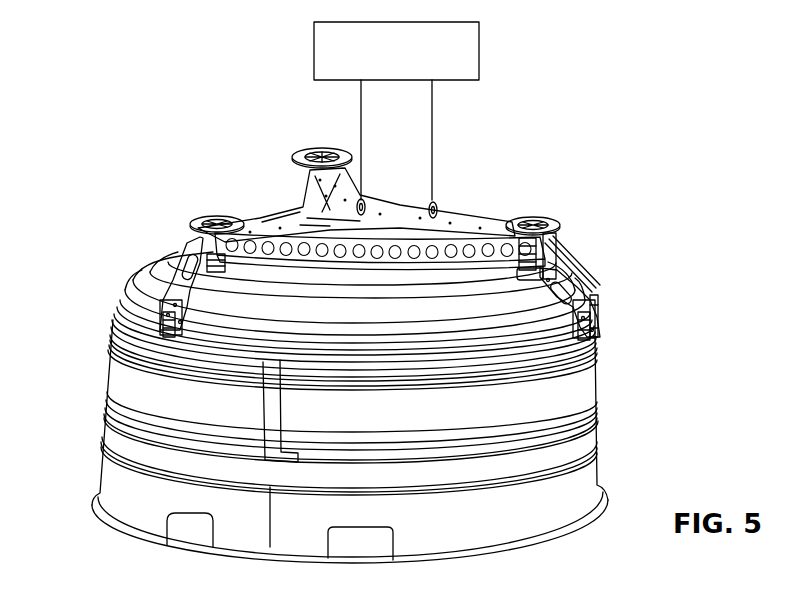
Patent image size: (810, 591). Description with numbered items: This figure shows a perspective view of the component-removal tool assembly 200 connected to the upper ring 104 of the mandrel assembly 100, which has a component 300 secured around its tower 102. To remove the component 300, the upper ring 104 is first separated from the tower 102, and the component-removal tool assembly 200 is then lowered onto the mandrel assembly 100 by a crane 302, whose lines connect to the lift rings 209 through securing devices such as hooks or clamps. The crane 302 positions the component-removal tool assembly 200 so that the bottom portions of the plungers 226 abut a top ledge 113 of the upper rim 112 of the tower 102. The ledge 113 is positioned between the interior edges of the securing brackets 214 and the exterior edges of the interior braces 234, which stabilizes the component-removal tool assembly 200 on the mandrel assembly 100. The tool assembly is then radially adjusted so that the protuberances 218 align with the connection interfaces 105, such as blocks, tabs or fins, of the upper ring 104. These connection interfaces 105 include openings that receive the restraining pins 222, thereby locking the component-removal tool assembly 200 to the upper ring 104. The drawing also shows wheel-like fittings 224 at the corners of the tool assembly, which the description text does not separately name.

The mandrel assembly 100 is at (95, 481).
The tower 102 is at (600, 463).
The upper ring 104 is at (133, 280).
The connection interfaces 105 is at (160, 334).
The upper rim 112 is at (160, 252).
The top ledge 113 is at (237, 287).
The component-removal tool assembly 200 is at (468, 214).
The lift rings 209 is at (365, 203).
The securing brackets 214 is at (560, 267).
The protuberances 218 is at (167, 318).
The restraining pins 222 is at (600, 331).
The pulley wheel 224 is at (307, 152).
The plungers 226 is at (543, 262).
The interior braces 234 is at (517, 277).
The component 300 is at (100, 390).
The crane 302 is at (480, 58).